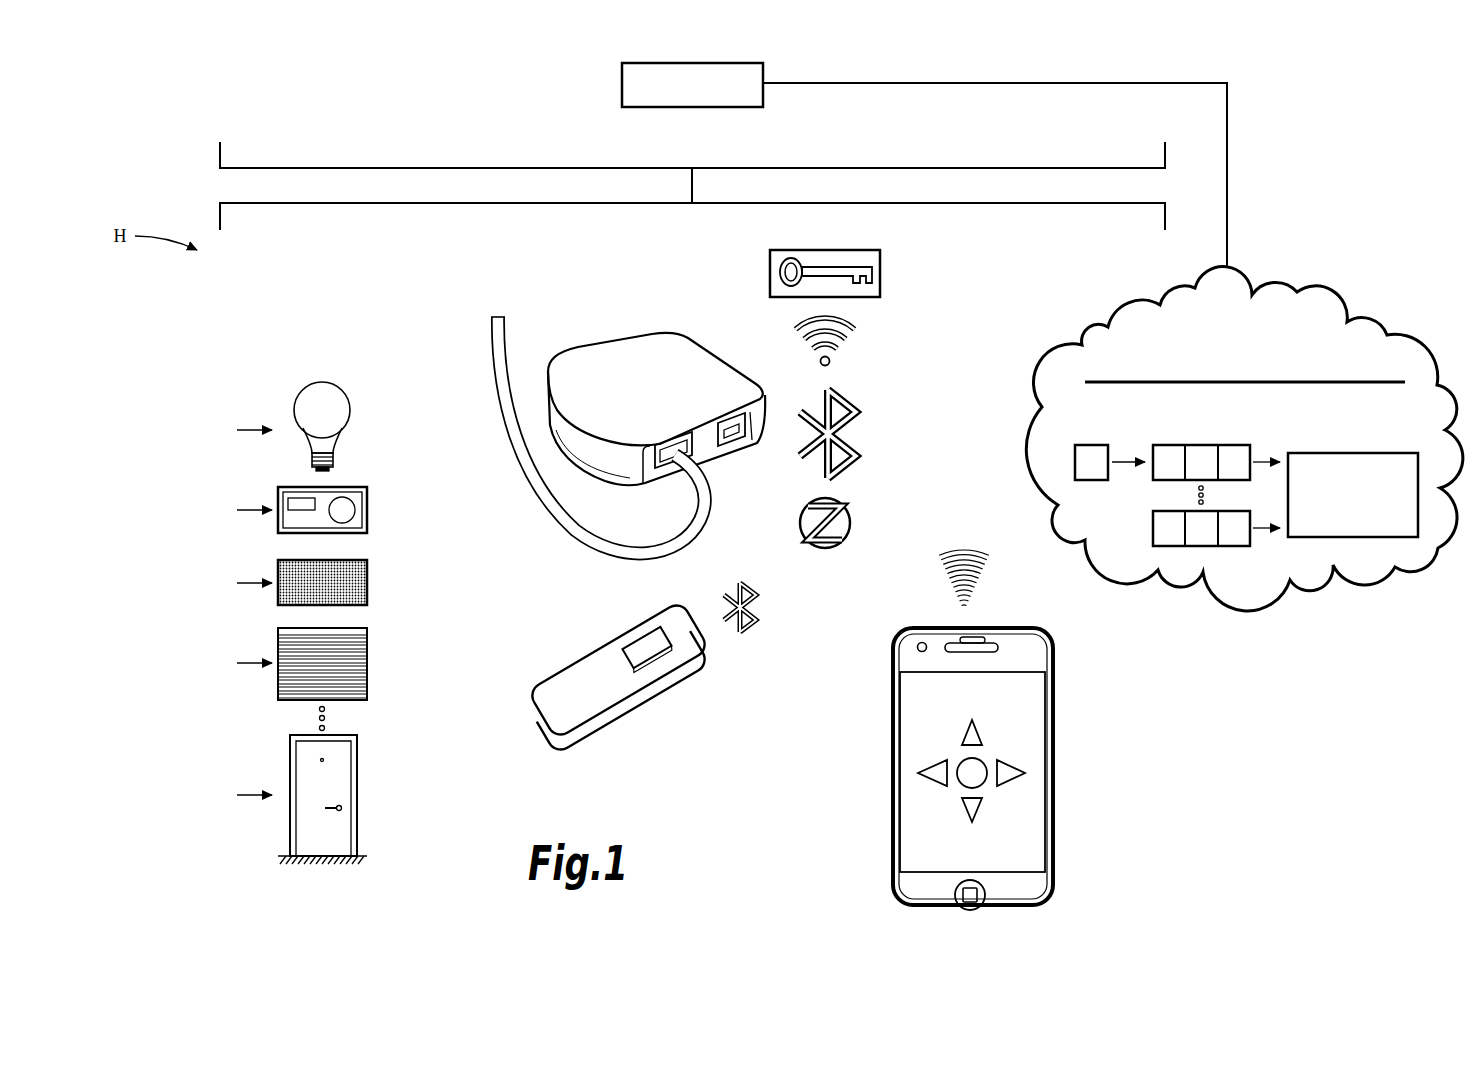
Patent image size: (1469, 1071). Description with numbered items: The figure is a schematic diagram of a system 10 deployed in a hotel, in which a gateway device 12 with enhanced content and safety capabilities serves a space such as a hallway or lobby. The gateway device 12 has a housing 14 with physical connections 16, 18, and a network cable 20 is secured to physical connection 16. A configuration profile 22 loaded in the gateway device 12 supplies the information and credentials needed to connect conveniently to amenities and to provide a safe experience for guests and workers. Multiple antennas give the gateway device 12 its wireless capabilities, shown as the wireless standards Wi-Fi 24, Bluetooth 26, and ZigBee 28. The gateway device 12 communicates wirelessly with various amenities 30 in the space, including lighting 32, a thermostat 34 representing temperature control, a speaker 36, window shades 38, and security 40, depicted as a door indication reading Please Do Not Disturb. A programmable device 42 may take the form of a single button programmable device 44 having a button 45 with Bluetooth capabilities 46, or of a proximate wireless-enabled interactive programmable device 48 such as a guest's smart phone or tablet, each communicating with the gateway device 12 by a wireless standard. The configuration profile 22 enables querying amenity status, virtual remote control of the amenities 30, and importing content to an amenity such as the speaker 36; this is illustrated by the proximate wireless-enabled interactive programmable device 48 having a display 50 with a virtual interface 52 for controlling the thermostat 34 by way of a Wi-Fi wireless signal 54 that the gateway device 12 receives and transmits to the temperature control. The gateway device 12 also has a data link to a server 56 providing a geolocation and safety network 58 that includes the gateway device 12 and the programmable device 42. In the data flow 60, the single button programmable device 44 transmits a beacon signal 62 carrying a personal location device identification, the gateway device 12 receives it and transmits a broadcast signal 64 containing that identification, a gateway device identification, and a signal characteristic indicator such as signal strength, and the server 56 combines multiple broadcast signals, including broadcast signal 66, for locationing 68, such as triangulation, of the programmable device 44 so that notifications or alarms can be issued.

The system 10 is at (1300, 140).
The gateway device 12 is at (675, 330).
The housing 14 is at (598, 343).
The physical connection 16 is at (672, 443).
The physical connection 18 is at (735, 446).
The network cable 20 is at (514, 450).
The configuration profile 22 is at (880, 272).
The Wi-Fi 24 is at (846, 344).
The Bluetooth 26 is at (852, 432).
The ZigBee 28 is at (850, 523).
The amenities 30 is at (404, 728).
The lighting 32 is at (350, 410).
The thermostat 34 is at (367, 510).
The speaker 36 is at (367, 583).
The window shades 38 is at (367, 663).
The security 40 is at (357, 795).
The programmable device 42 is at (766, 742).
The single button programmable device 44 is at (648, 700).
The button 45 is at (634, 647).
The Bluetooth capabilities 46 is at (758, 612).
The proximate wireless-enabled interactive programmable device 48 is at (1054, 800).
The display 50 is at (1030, 725).
The virtual interface 52 is at (910, 785).
The Wi-Fi wireless signal 54 is at (967, 548).
The server 56 is at (620, 83).
The geolocation and safety network 58 is at (1340, 295).
The data flow 60 is at (1242, 428).
The beacon signal 62 is at (1094, 445).
The broadcast signal 64 is at (1199, 445).
The broadcast signal 66 is at (1152, 528).
The locationing 68 is at (1359, 453).